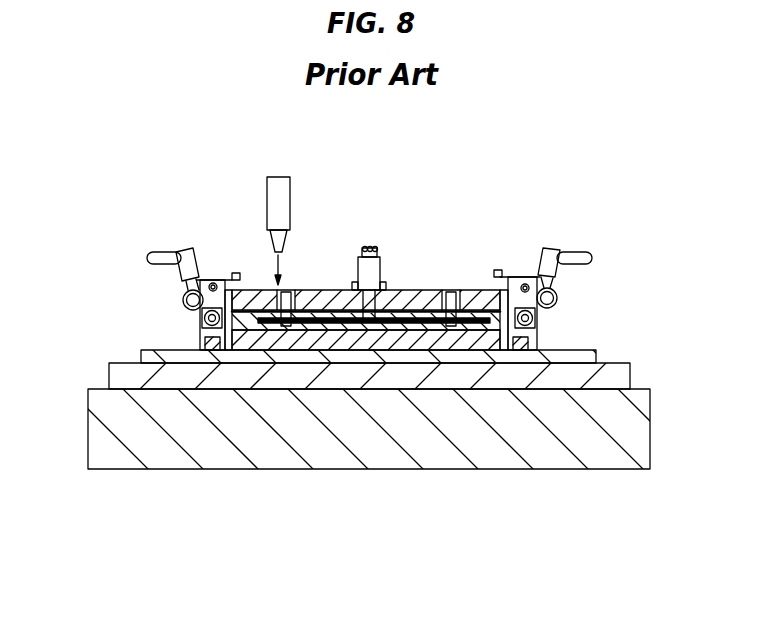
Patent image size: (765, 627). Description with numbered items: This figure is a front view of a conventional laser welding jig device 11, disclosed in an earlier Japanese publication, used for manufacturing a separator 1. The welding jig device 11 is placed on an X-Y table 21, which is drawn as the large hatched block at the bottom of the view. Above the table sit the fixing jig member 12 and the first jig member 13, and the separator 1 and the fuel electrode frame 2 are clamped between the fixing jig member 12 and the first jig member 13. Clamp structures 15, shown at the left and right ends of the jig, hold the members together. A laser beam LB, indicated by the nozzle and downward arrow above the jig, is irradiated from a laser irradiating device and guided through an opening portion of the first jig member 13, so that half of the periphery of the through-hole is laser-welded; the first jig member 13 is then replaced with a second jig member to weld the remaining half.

The welding jig device 11 is at (145, 152).
The separator 1 is at (415, 290).
The fuel electrode frame 2 is at (443, 325).
The fixing jig member 12 is at (562, 350).
The first jig member 13 is at (470, 288).
The clamp structures 15 is at (182, 300).
The X-Y table 21 is at (147, 470).
The laser beam LB is at (283, 267).